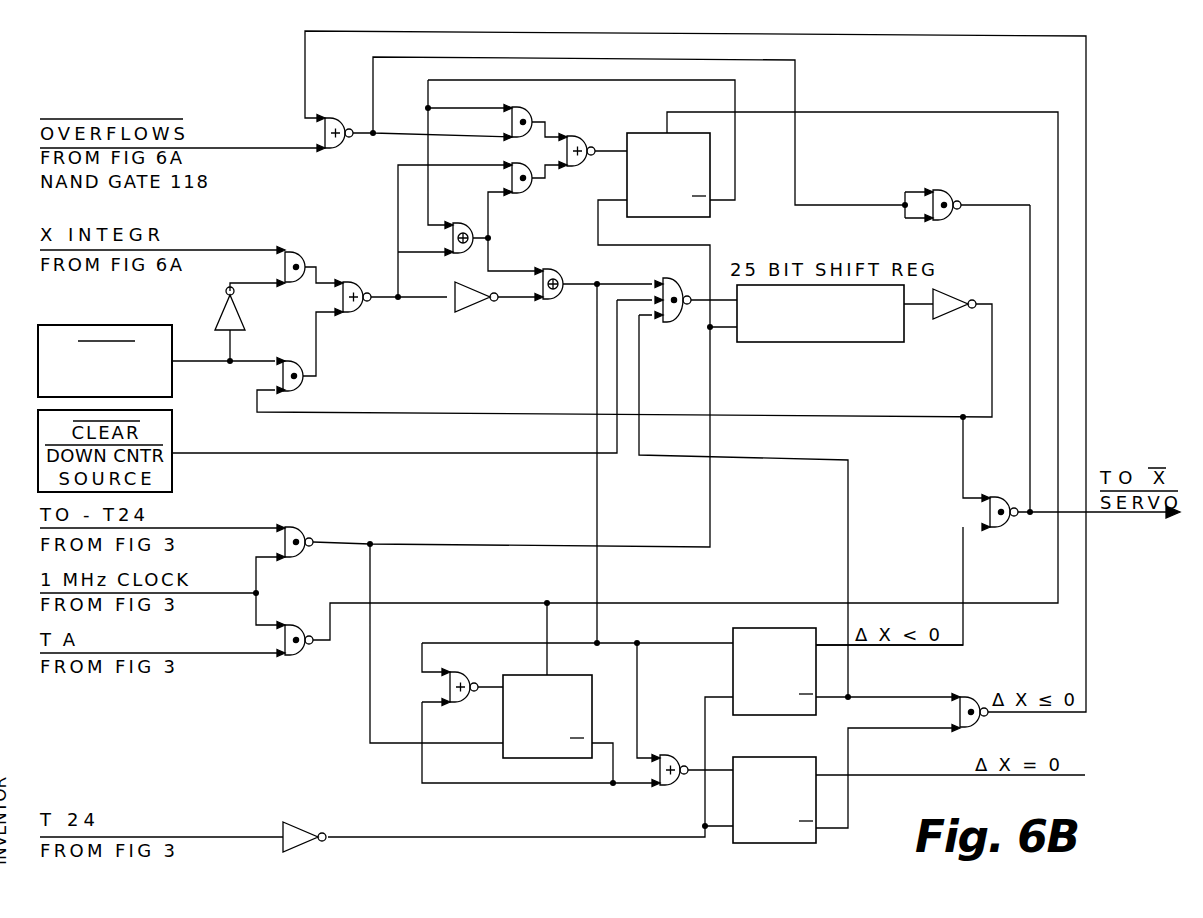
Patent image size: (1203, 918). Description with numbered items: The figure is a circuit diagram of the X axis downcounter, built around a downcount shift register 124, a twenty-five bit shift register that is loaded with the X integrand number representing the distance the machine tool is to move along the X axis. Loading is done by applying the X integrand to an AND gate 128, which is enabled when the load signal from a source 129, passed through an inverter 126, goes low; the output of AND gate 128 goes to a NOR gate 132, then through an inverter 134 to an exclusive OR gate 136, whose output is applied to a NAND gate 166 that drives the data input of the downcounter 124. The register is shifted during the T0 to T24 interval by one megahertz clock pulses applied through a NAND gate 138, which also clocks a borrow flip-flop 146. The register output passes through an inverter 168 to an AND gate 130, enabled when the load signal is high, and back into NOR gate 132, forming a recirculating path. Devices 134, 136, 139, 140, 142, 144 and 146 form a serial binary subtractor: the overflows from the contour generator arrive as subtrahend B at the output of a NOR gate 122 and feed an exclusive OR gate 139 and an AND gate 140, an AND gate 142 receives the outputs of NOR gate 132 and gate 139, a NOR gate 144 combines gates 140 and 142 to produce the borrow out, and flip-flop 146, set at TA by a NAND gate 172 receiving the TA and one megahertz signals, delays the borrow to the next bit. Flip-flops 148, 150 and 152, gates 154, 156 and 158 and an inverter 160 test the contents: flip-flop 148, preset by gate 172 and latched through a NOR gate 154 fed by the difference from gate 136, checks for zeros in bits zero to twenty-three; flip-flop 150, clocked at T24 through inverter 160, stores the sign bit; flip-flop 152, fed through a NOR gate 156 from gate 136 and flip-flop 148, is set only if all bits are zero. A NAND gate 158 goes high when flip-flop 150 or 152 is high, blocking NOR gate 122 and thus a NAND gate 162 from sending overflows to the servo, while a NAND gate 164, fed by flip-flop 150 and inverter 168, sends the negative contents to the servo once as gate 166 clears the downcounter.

The NOR gate 122 is at (336, 118).
The downcount shift register 124 is at (843, 342).
The inverter 126 is at (242, 300).
The AND gate 128 is at (296, 251).
The load signal source 129 is at (176, 377).
The AND gate 130 is at (300, 383).
The NOR gate 132 is at (351, 284).
The inverter 134 is at (472, 309).
The exclusive OR gate 136 is at (550, 271).
The NAND gate 138 is at (298, 523).
The exclusive OR gate 139 is at (457, 223).
The AND gate 140 is at (532, 112).
The AND gate 142 is at (530, 192).
The NOR gate 144 is at (580, 138).
The borrow flip-flop 146 is at (712, 210).
The flip-flop 148 is at (567, 676).
The flip-flop 150 is at (768, 716).
The flip-flop 152 is at (767, 845).
The NOR gate 154 is at (458, 672).
The NOR gate 156 is at (676, 753).
The NAND gate 158 is at (972, 695).
The inverter 160 is at (298, 824).
The NAND gate 162 is at (944, 191).
The NAND gate 164 is at (1003, 491).
The NAND gate 166 is at (690, 272).
The inverter 168 is at (956, 295).
The NAND gate 172 is at (308, 605).